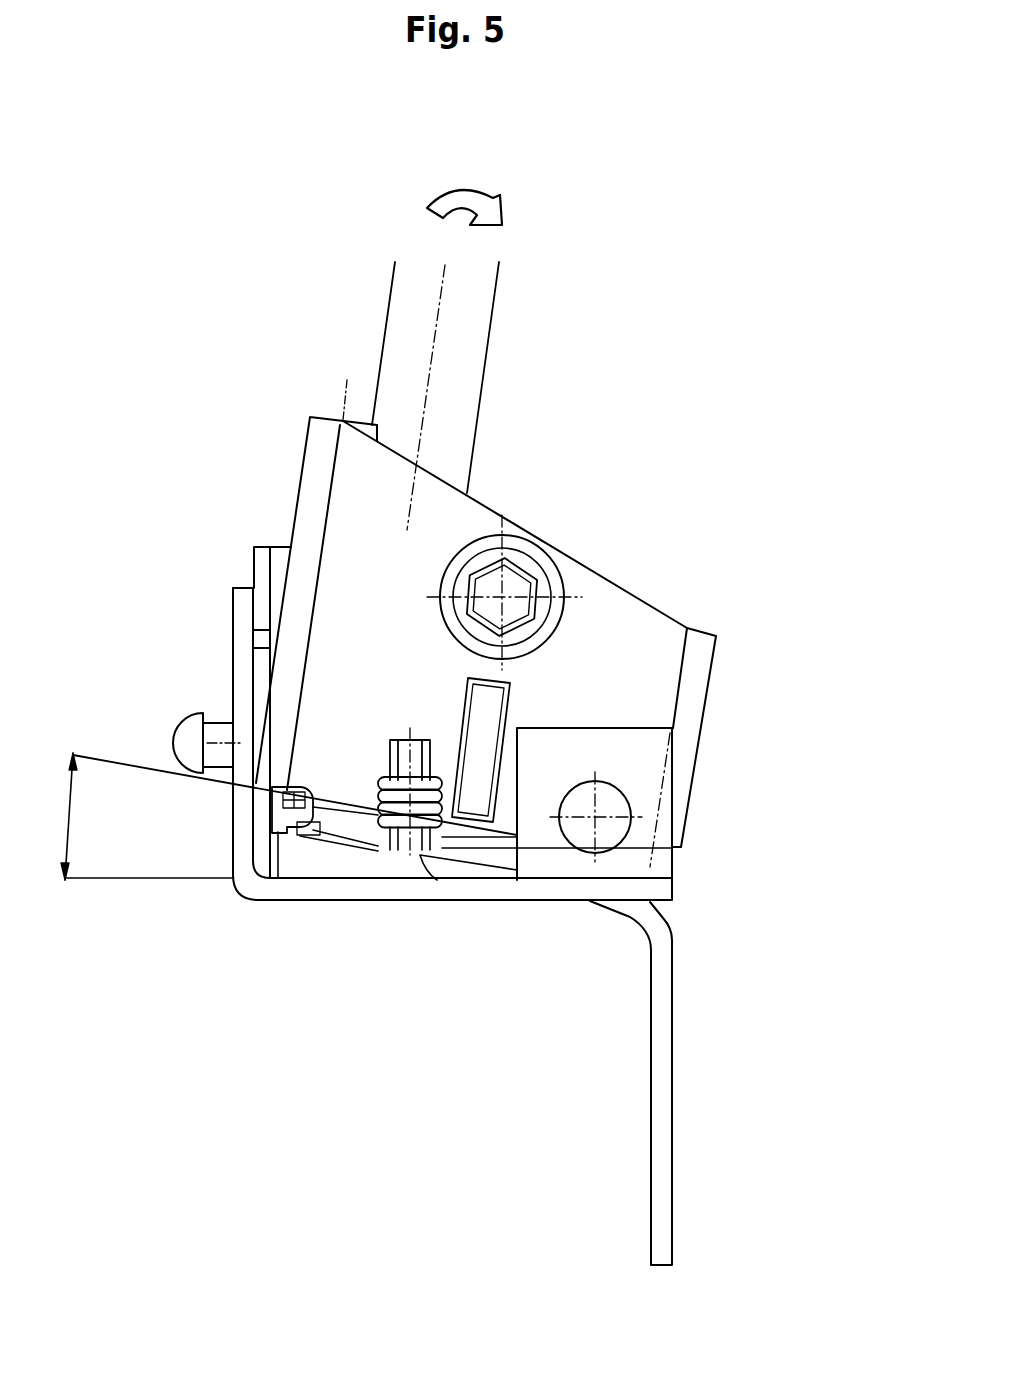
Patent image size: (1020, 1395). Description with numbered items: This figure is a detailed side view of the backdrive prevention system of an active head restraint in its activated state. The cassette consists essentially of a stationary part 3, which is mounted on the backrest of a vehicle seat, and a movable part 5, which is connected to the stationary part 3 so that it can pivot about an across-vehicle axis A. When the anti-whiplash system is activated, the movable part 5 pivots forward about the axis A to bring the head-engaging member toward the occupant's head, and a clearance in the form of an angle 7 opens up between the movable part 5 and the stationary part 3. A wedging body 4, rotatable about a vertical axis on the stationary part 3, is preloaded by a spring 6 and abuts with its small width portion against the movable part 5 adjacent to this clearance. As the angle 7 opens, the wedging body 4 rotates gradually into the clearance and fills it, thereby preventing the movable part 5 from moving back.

The stationary part 3 is at (497, 888).
The wedging body 4 is at (332, 868).
The movable part 5 is at (602, 642).
The spring 6 is at (410, 855).
The angle 7 is at (128, 816).
The across-vehicle axis A is at (597, 810).